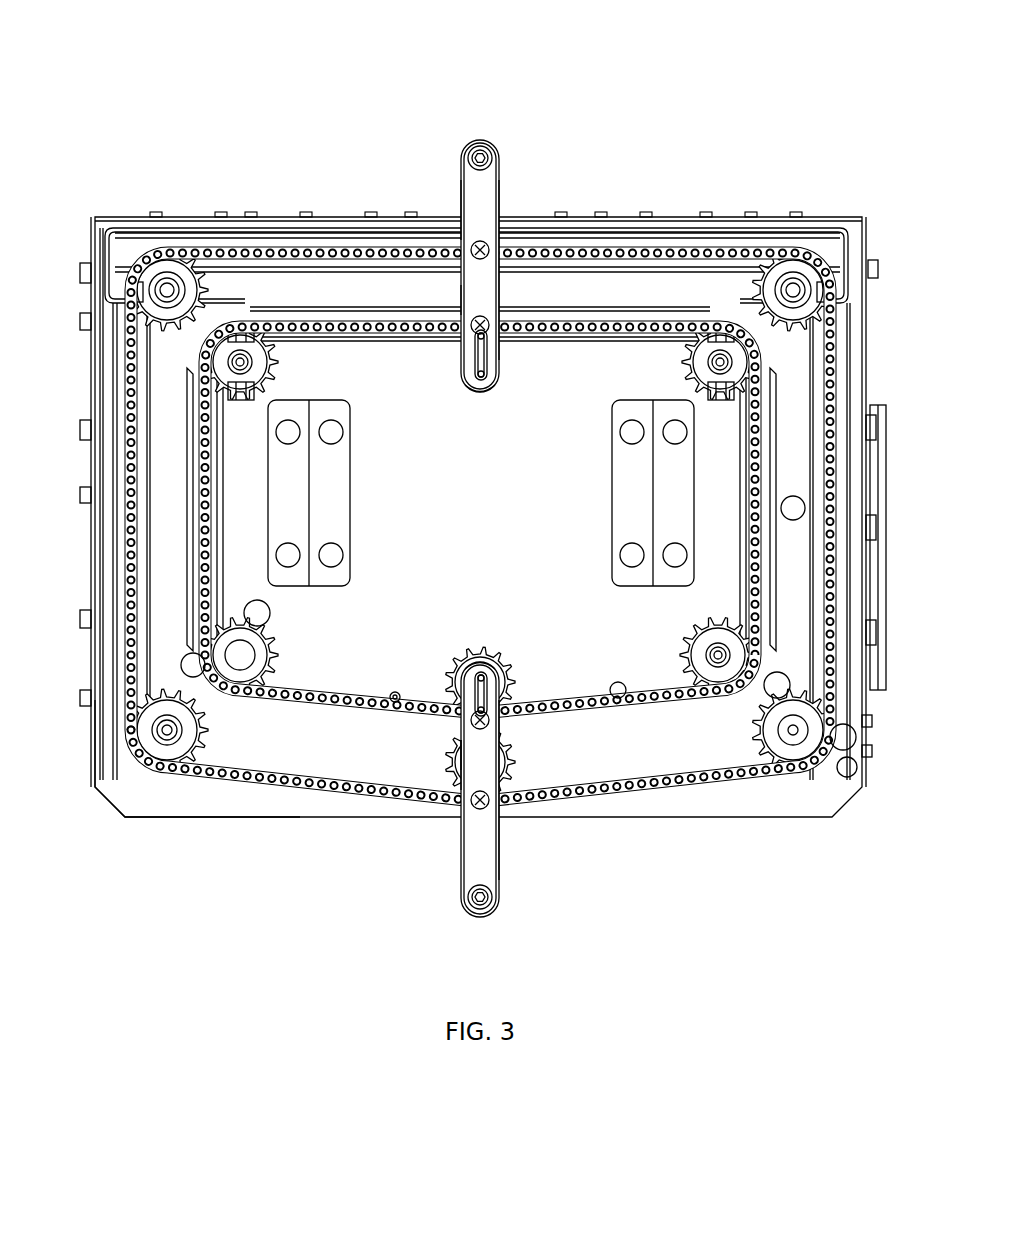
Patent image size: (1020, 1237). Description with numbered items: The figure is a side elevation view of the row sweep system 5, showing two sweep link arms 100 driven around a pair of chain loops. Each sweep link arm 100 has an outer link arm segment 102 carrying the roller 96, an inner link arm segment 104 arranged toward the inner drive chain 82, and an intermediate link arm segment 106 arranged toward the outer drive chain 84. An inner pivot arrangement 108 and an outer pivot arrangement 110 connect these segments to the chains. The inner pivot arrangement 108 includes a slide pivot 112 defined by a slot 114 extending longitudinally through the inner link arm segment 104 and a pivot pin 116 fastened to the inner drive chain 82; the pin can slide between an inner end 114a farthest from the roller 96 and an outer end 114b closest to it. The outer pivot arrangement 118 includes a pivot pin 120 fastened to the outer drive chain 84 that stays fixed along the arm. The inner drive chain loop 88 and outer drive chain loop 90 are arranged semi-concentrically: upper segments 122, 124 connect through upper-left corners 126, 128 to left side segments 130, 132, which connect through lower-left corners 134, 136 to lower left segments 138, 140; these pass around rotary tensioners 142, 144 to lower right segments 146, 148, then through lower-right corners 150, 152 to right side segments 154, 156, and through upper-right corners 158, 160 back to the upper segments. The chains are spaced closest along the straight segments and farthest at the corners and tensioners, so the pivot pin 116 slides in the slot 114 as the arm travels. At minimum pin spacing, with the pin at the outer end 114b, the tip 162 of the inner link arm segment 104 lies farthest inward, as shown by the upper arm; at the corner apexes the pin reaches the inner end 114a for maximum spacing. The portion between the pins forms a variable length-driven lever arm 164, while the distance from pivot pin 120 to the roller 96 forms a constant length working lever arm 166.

The conveyor drive assembly 5 is at (553, 72).
The inner drive chain 82 is at (622, 322).
The outer drive chain 84 is at (662, 236).
The inner drive chain loop 88 is at (660, 307).
The outer drive chain loop 90 is at (760, 247).
The roller 96 is at (478, 142).
The sweep link arm 100 is at (466, 176).
The outer link arm segment 102 is at (505, 160).
The inner link arm segment 104 is at (457, 398).
The intermediate link arm segment 106 is at (518, 248).
The inner pivot arrangement 108 is at (491, 305).
The outer pivot arrangement 110 is at (470, 196).
The slide pivot 112 is at (466, 345).
The slot 114 is at (476, 367).
The inner end 114a is at (492, 380).
The outer end 114b is at (496, 331).
The pivot pin 116 is at (491, 326).
The outer pivot arrangement 118 is at (491, 243).
The pivot pin 120 is at (476, 244).
The upper segment 122 is at (348, 313).
The upper segment 124 is at (276, 224).
The upper-left corner 126 is at (225, 330).
The upper-left corner 128 is at (160, 243).
The left side segment 130 is at (190, 516).
The left side segment 132 is at (103, 500).
The lower-left corner 134 is at (205, 658).
The lower-left corner 136 is at (121, 778).
The lower left segment 138 is at (276, 724).
The lower left segment 140 is at (217, 795).
The rotary tensioner 142 is at (511, 678).
The rotary tensioner 144 is at (521, 773).
The lower right segment 146 is at (620, 722).
The lower right segment 148 is at (697, 789).
The lower-right corner 150 is at (768, 663).
The lower-right corner 152 is at (838, 754).
The right side segment 154 is at (776, 470).
The right side segment 156 is at (857, 395).
The upper-right corner 158 is at (756, 322).
The upper-right corner 160 is at (818, 243).
The tip 162 is at (481, 395).
The variable length-driven lever arm 164 is at (466, 300).
The constant length working lever arm 166 is at (503, 185).